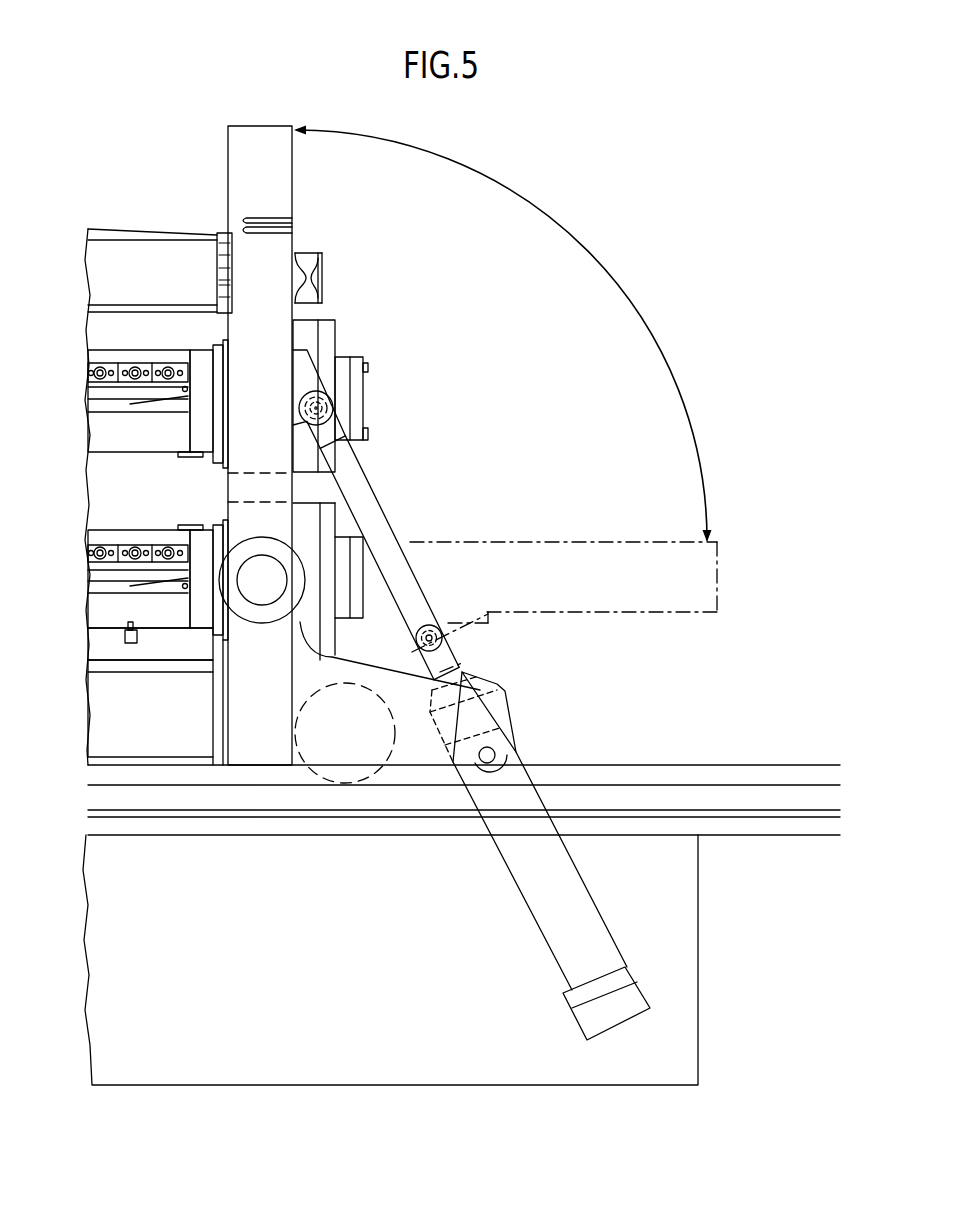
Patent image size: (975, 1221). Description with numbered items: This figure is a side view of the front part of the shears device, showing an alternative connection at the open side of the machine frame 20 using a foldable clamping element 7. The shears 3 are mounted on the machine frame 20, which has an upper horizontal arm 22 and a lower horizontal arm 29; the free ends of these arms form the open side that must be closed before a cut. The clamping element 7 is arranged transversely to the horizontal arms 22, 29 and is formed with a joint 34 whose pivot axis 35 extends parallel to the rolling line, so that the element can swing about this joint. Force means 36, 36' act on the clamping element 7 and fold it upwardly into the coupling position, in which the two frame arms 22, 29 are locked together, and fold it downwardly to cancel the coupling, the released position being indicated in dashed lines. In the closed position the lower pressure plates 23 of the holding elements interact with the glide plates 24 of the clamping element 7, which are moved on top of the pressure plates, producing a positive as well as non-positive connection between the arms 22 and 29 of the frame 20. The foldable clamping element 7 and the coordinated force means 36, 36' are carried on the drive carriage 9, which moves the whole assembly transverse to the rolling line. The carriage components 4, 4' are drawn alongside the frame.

The shears 3 is at (76, 395).
The carriage 4 is at (133, 404).
The second carriage 4' is at (135, 590).
The clamping element 7 is at (262, 122).
The drive carriage 9 is at (355, 750).
The machine frame 20 is at (160, 231).
The upper horizontal frame arm 22 is at (164, 295).
The pressure plate 23 is at (290, 200).
The gliding plate 24 is at (268, 217).
The lower horizontal frame arm 29 is at (161, 724).
The joint 34 is at (349, 585).
The pivot axis 35 is at (272, 582).
The force means 36 is at (558, 856).
The force means 36' is at (551, 896).